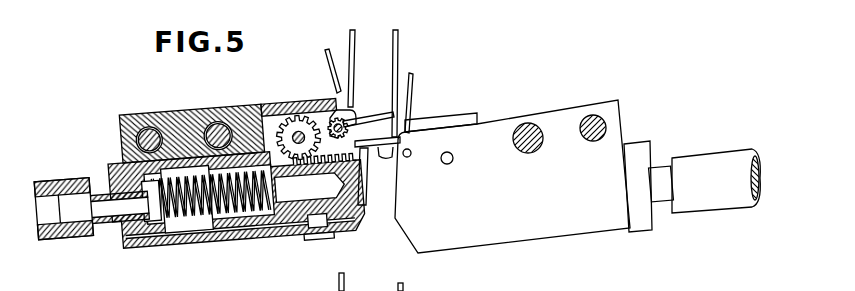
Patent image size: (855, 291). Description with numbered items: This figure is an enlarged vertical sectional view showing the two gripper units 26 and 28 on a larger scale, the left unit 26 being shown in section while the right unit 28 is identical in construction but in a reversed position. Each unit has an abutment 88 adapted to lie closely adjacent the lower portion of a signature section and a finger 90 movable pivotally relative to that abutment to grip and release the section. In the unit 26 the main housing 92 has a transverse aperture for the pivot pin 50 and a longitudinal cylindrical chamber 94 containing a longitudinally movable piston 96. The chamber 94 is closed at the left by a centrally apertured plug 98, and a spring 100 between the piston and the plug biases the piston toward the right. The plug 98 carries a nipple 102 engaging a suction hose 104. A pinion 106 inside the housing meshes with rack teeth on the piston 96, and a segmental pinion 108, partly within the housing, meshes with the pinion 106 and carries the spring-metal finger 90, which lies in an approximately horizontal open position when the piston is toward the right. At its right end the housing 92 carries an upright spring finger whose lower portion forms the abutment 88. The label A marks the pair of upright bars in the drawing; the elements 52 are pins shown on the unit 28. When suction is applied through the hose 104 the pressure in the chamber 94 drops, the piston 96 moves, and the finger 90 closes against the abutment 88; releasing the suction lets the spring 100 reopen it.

The gripper unit 26 is at (252, 102).
The gripper unit 28 is at (500, 118).
The pivot pin 50 is at (218, 113).
The pins 52 is at (544, 129).
The abutment 88 is at (338, 87).
The finger 90 is at (372, 120).
The main housing 92 is at (165, 115).
The cylindrical chamber 94 is at (199, 222).
The piston 96 is at (246, 232).
The plug 98 is at (122, 250).
The spring 100 is at (177, 230).
The nipple 102 is at (109, 227).
The suction hose 104 is at (50, 182).
The pinion 106 is at (287, 99).
The segmental pinion 108 is at (323, 100).
The bars assembly A is at (395, 70).